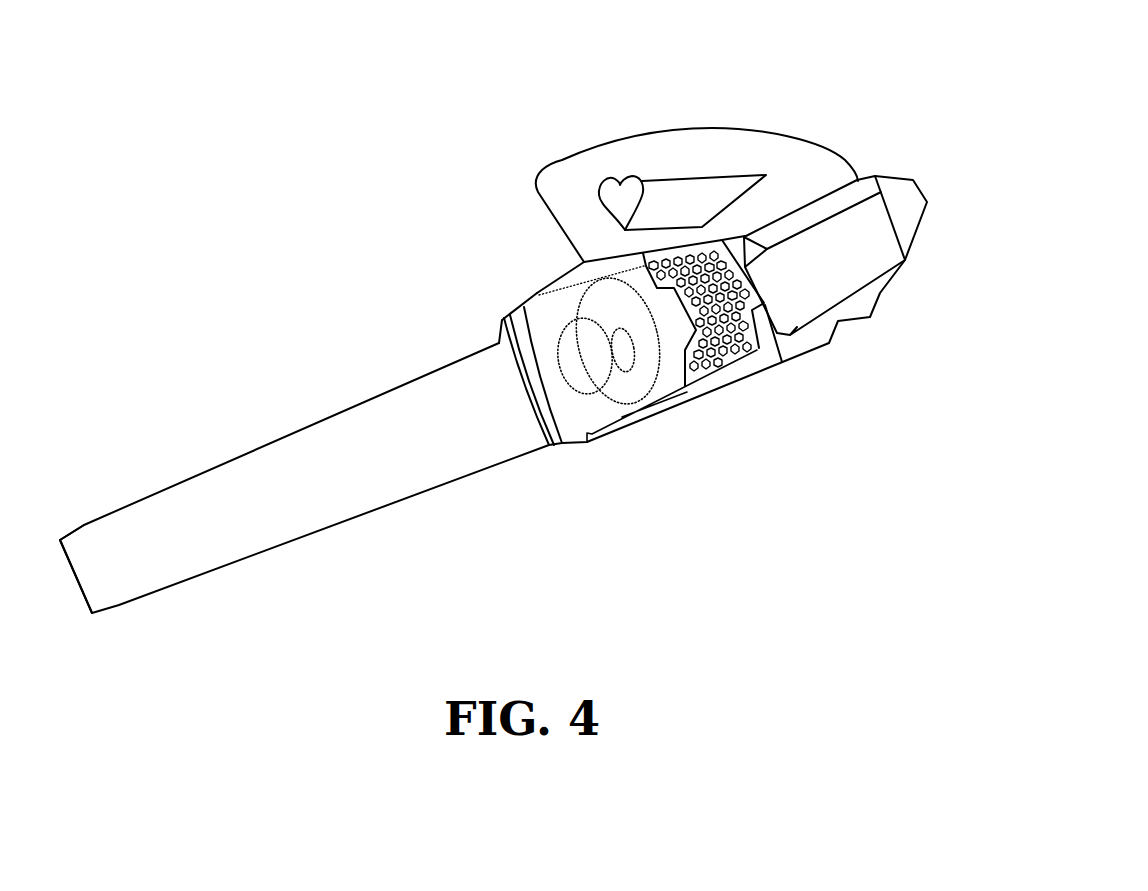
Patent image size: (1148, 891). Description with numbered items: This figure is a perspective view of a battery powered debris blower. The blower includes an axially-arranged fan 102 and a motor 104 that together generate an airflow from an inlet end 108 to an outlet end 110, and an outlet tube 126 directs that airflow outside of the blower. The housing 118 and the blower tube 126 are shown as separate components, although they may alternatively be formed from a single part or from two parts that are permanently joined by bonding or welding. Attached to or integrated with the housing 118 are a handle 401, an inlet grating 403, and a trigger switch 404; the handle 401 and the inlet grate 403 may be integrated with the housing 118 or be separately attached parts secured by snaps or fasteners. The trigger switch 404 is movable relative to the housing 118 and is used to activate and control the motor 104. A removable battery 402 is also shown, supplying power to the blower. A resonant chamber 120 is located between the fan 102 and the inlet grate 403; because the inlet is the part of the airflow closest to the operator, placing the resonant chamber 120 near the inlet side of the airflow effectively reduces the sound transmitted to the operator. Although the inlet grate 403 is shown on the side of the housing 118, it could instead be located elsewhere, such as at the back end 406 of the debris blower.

The fan 102 is at (587, 370).
The motor 104 is at (623, 348).
The inlet end 108 is at (762, 336).
The outlet end 110 is at (76, 583).
The housing 118 is at (950, 362).
The resonant chamber 120 is at (662, 330).
The outlet tube 126 is at (317, 512).
The handle 401 is at (555, 175).
The removable battery 402 is at (850, 222).
The inlet grating 403 is at (690, 250).
The trigger switch 404 is at (618, 183).
The back end 406 is at (912, 168).